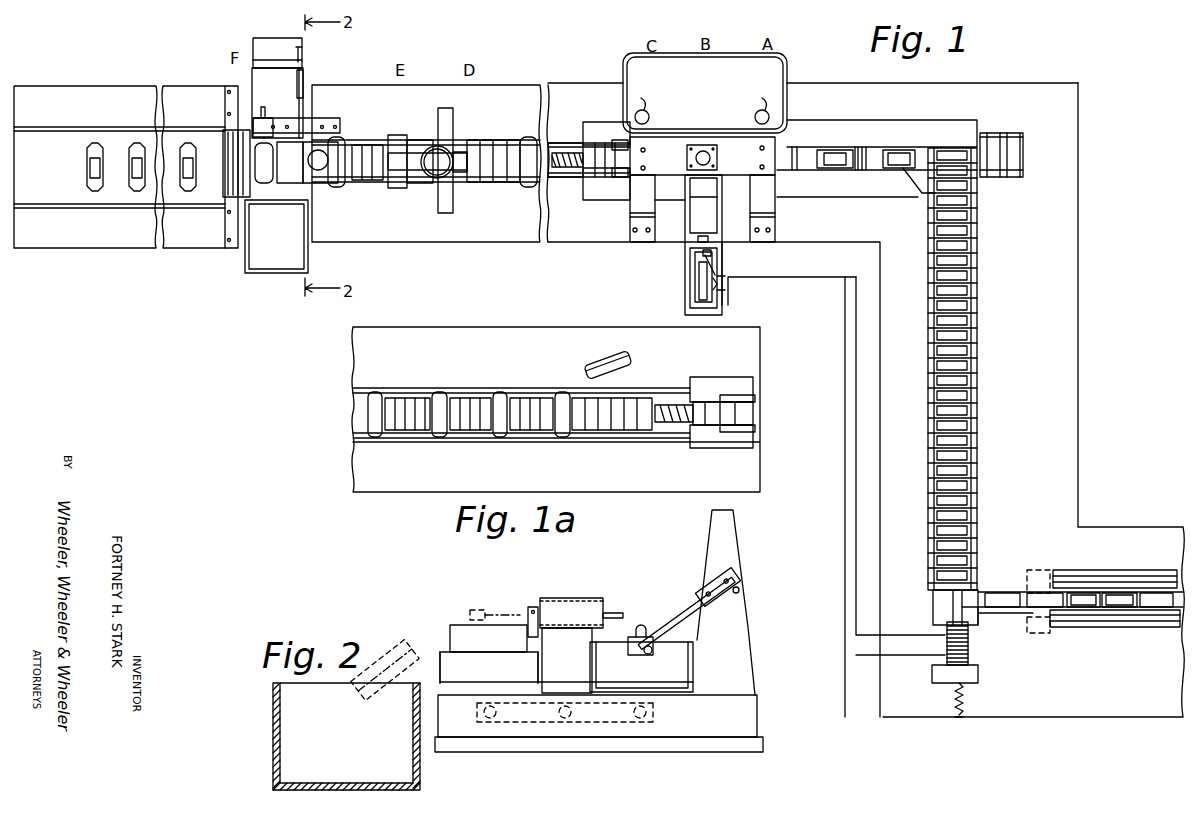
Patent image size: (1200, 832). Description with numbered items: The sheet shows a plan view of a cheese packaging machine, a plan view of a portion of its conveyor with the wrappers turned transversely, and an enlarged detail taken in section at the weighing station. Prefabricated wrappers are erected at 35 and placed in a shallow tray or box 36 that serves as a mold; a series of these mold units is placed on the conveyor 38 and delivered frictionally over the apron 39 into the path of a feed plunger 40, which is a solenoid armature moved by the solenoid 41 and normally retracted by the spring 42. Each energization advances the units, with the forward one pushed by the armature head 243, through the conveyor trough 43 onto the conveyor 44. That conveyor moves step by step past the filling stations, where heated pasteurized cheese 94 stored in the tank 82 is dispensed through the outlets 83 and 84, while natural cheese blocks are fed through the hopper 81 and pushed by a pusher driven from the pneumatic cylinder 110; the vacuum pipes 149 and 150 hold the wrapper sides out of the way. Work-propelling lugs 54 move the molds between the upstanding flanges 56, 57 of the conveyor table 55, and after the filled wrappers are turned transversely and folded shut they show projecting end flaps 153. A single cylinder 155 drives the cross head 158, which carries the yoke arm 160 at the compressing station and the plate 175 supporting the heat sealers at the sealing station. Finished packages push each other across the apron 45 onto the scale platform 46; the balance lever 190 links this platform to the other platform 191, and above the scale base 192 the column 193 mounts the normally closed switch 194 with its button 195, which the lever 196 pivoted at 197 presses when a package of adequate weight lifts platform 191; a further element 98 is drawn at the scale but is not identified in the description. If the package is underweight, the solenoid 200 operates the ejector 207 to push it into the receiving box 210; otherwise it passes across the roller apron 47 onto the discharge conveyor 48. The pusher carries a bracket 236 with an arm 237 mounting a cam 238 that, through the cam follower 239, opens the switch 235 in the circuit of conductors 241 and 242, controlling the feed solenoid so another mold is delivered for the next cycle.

In FIG. 1, the erected wrapper 35 is at (833, 150).
In FIG. 1, the tray or box 36 is at (318, 152).
In FIG. 1A, the tray or box 36 is at (447, 395).
In FIG. 2, the tray or box 36 is at (488, 631).
In FIG. 1, the conveyor 38 is at (1180, 580).
In FIG. 1, the apron 39 is at (985, 592).
In FIG. 1, the feed conveyor plunger 40 is at (950, 610).
In FIG. 1, the solenoid 41 is at (968, 650).
In FIG. 1, the spring 42 is at (963, 700).
In FIG. 1, the conveyor trough 43 is at (983, 458).
In FIG. 1, the conveyor 44 is at (493, 150).
In FIG. 1A, the conveyor 44 is at (645, 405).
In FIG. 1, the apron 45 is at (302, 175).
In FIG. 1, the scale platform 46 is at (285, 187).
In FIG. 2, the scale platform 46 is at (448, 652).
In FIG. 1, the roller apron 47 is at (236, 170).
In FIG. 1, the discharge conveyor 48 is at (125, 200).
In FIG. 1A, the work-propelling lugs 54 is at (632, 430).
In FIG. 1, the conveyor table 55 is at (858, 200).
In FIG. 1, the upstanding flange 56 is at (867, 148).
In FIG. 1, the upstanding flange 57 is at (883, 168).
In FIG. 1, the hopper 81 is at (690, 193).
In FIG. 1, the tank 82 is at (775, 80).
In FIG. 1, the outlet 83 is at (757, 107).
In FIG. 1, the outlet 84 is at (641, 108).
In FIG. 1, the pasteurized cheese 94 is at (566, 155).
In FIG. 2, the workpiece holder 98 is at (650, 640).
In FIG. 1, the pneumatic cylinder 110 is at (690, 283).
In FIG. 1, the vacuum pipe 149 is at (622, 177).
In FIG. 1A, the vacuum pipe 149 is at (745, 430).
In FIG. 1, the vacuum pipe 150 is at (621, 140).
In FIG. 1A, the vacuum pipe 150 is at (740, 398).
In FIG. 1, the projecting end flaps 153 is at (527, 185).
In FIG. 1A, the projecting end flaps 153 is at (565, 440).
In FIG. 1, the cylinder 155 is at (437, 165).
In FIG. 1, the cross head 158 is at (415, 157).
In FIG. 1, the downwardly turned arm 160 is at (470, 178).
In FIG. 1, the plate 175 is at (396, 145).
In FIG. 2, the lever 190 is at (530, 710).
In FIG. 1, the platform 191 is at (260, 87).
In FIG. 2, the platform 191 is at (653, 673).
In FIG. 2, the scale base 192 is at (727, 727).
In FIG. 1, the column 193 is at (263, 50).
In FIG. 2, the column 193 is at (725, 565).
In FIG. 1, the sensitized switch 194 is at (302, 55).
In FIG. 2, the sensitized switch 194 is at (712, 580).
In FIG. 2, the projecting button 195 is at (742, 612).
In FIG. 1, the lever 196 is at (303, 82).
In FIG. 2, the lever 196 is at (727, 608).
In FIG. 2, the pivot 197 is at (735, 590).
In FIG. 1, the solenoid 200 is at (268, 118).
In FIG. 2, the solenoid 200 is at (582, 612).
In FIG. 1, the ejector 207 is at (291, 162).
In FIG. 2, the ejector 207 is at (528, 620).
In FIG. 1, the receiving box 210 is at (275, 255).
In FIG. 2, the receiving box 210 is at (346, 715).
In FIG. 1, the switch 235 is at (725, 290).
In FIG. 1, the bracket 236 is at (716, 240).
In FIG. 1, the arm 237 is at (688, 244).
In FIG. 1, the cam 238 is at (700, 270).
In FIG. 1, the cam follower 239 is at (720, 258).
In FIG. 1, the conductor 241 is at (845, 668).
In FIG. 1, the conductor 242 is at (856, 700).
In FIG. 1, the armature head 243 is at (955, 592).